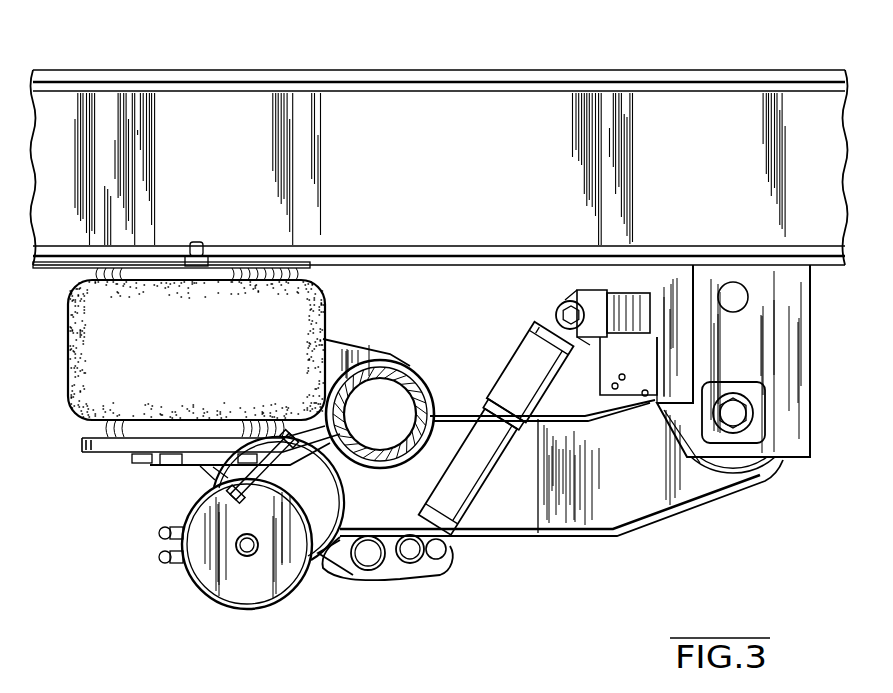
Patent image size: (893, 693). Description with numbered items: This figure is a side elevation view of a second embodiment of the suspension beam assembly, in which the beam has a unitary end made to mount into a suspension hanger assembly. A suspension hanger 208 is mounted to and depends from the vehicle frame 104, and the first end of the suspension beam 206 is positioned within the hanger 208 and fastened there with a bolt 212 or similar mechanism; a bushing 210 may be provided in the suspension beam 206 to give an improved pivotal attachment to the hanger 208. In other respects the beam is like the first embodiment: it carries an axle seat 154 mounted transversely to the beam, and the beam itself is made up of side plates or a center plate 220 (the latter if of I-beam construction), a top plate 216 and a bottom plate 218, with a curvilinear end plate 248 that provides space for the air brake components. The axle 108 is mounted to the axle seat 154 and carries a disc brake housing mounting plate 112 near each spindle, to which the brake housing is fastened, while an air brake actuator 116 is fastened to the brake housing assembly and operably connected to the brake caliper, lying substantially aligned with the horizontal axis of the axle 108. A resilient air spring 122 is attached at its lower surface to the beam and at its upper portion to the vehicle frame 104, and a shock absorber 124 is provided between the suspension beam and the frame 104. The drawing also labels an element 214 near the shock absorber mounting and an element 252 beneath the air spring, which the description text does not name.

The vehicle frame 104 is at (178, 103).
The axle 108 is at (416, 442).
The disc brake housing mounting plate 112 is at (377, 358).
The air brake actuator 116 is at (198, 572).
The air spring 122 is at (70, 432).
The shock absorber 124 is at (530, 350).
The axle seat 154 is at (436, 406).
The suspension beam 206 is at (563, 537).
The suspension hanger 208 is at (770, 470).
The bushing 210 is at (717, 468).
The bolt 212 is at (735, 437).
The shock mount bracket 214 is at (657, 398).
The top plate 216 is at (564, 419).
The bottom plate 218 is at (507, 530).
The side plates or center plate 220 is at (513, 490).
The curvilinear end plate 248 is at (195, 461).
The lower spring seat 252 is at (119, 446).